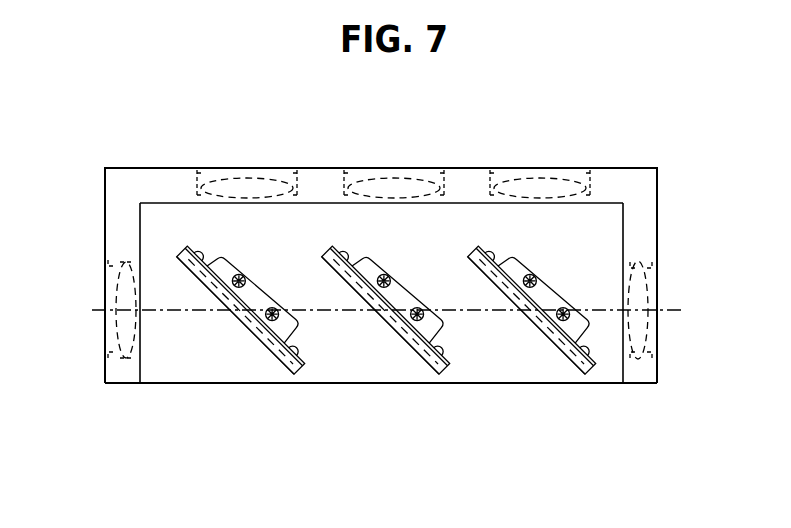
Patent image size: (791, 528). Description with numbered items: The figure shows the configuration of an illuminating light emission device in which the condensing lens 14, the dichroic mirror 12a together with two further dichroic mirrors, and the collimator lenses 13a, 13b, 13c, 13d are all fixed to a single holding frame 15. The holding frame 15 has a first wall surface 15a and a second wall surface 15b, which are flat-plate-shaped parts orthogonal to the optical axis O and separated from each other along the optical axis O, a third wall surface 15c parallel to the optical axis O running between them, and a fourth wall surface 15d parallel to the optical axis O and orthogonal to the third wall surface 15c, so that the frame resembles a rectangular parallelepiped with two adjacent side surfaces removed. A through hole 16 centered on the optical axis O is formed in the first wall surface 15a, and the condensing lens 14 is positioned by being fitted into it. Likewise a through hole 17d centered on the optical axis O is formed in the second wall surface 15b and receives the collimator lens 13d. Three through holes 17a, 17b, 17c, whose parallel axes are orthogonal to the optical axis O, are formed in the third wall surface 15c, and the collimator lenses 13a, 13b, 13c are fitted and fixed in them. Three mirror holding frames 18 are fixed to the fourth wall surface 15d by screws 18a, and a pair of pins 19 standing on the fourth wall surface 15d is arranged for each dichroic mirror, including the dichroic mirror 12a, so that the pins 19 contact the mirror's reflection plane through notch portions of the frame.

The dichroic mirror 12a is at (253, 330).
The collimator lens 13a is at (537, 172).
The collimator lens 13b is at (391, 172).
The collimator lens 13c is at (245, 172).
The collimator lens 13d is at (117, 300).
The condensing lens 14 is at (648, 290).
The holding frame 15 is at (337, 385).
The first wall surface 15a is at (643, 237).
The second wall surface 15b is at (118, 230).
The third wall surface 15c is at (315, 182).
The fourth wall surface 15d is at (190, 350).
The through hole 16 is at (655, 352).
The through hole 17a is at (585, 178).
The through hole 17b is at (440, 178).
The through hole 17c is at (294, 180).
The through hole 17d is at (108, 345).
The mirror holding frame 18 is at (292, 376).
The screw 18a is at (246, 282).
The pin 19 is at (202, 252).
The optical axis O is at (684, 313).